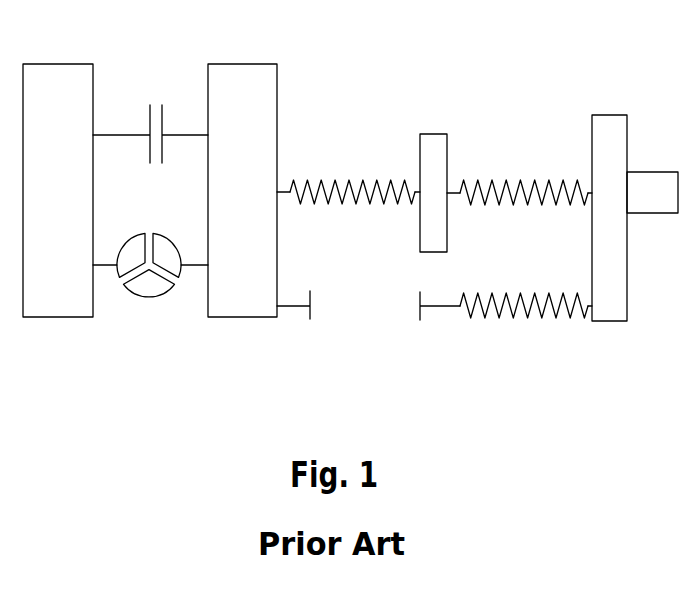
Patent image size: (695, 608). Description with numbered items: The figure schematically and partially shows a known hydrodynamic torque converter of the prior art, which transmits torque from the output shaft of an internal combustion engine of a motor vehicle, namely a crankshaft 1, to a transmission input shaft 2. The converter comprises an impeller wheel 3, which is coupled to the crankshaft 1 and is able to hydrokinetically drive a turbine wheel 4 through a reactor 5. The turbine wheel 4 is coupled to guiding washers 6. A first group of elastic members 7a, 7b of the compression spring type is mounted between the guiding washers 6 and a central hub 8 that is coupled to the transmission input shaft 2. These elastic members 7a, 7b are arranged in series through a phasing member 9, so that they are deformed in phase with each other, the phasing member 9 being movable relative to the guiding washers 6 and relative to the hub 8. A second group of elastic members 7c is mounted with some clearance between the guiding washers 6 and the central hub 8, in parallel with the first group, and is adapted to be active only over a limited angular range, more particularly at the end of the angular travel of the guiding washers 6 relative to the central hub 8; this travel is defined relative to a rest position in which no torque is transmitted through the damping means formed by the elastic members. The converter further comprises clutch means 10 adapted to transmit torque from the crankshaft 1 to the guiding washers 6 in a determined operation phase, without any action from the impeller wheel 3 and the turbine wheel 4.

The crankshaft 1 is at (62, 293).
The transmission input shaft 2 is at (646, 185).
The impeller wheel 3 is at (125, 270).
The turbine wheel 4 is at (177, 268).
The reactor 5 is at (152, 283).
The guiding washers 6 is at (253, 99).
The elastic member 7a is at (352, 182).
The elastic member 7b is at (507, 180).
The elastic member 7c is at (530, 312).
The central hub 8 is at (605, 128).
The phasing member 9 is at (432, 147).
The clutch means 10 is at (157, 102).